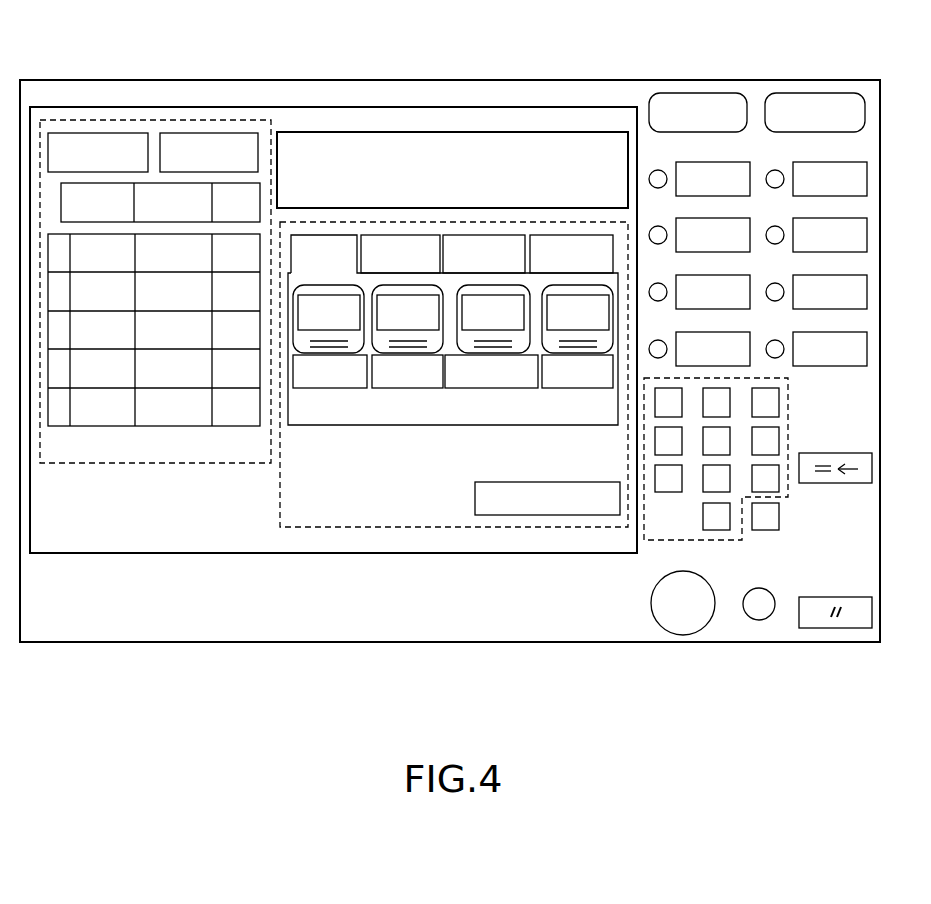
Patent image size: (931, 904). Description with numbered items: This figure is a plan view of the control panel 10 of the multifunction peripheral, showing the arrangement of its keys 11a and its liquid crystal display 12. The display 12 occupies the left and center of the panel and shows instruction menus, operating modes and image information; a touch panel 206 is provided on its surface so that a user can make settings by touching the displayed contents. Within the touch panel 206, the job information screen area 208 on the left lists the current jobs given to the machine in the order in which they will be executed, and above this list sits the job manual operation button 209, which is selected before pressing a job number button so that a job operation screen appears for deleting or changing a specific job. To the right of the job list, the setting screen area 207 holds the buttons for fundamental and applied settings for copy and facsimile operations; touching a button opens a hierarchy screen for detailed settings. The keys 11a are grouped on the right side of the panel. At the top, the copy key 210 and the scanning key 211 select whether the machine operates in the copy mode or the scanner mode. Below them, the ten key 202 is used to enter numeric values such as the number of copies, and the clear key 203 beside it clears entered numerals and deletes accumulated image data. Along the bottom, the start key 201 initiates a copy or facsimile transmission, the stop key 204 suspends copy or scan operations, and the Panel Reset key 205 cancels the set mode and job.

The control panel 10 is at (84, 80).
The display 12 is at (325, 107).
The keys 11a is at (628, 593).
The start key 201 is at (685, 608).
The ten key 202 is at (788, 403).
The clear key 203 is at (779, 517).
The stop key 204 is at (760, 608).
The Panel Reset key 205 is at (817, 617).
The touch panel 206 is at (439, 124).
The setting screen area 207 is at (450, 527).
The job information screen area 208 is at (165, 463).
The job manual operation button 209 is at (213, 133).
The copy key 210 is at (698, 93).
The scanning key 211 is at (822, 93).